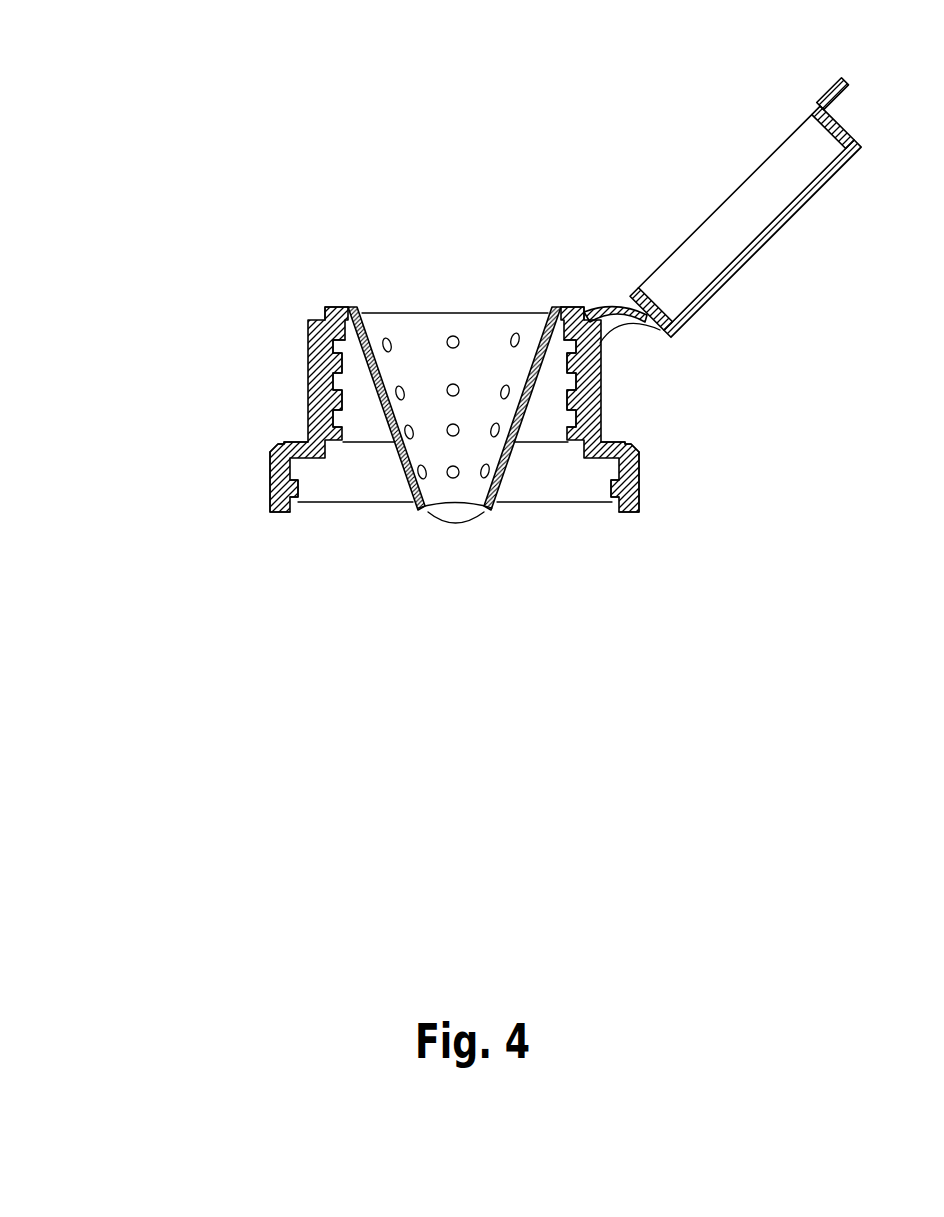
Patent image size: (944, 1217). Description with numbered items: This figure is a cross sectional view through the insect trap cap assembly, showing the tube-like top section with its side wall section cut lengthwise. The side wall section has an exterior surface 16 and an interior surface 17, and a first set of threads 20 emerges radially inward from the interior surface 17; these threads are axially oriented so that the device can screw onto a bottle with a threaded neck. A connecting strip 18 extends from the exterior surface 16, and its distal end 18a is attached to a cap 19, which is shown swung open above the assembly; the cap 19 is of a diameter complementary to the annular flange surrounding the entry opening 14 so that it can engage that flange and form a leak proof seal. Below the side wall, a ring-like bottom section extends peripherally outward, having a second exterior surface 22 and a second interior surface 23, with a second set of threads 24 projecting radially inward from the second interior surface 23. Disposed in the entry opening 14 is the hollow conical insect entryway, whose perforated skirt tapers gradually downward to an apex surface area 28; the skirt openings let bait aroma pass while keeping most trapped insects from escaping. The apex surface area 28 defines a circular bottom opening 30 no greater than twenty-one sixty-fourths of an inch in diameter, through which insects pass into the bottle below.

The entry opening 14 is at (401, 494).
The exterior surface 16 is at (468, 466).
The interior surface 17 is at (312, 318).
The connecting strip 18 is at (612, 300).
The distal end 18a is at (630, 302).
The cap 19 is at (747, 260).
The first set of threads 20 is at (340, 378).
The second exterior surface 22 is at (270, 485).
The second interior surface 23 is at (279, 448).
The second set of threads 24 is at (308, 483).
The apex surface area 28 is at (418, 510).
The circular bottom opening 30 is at (450, 525).